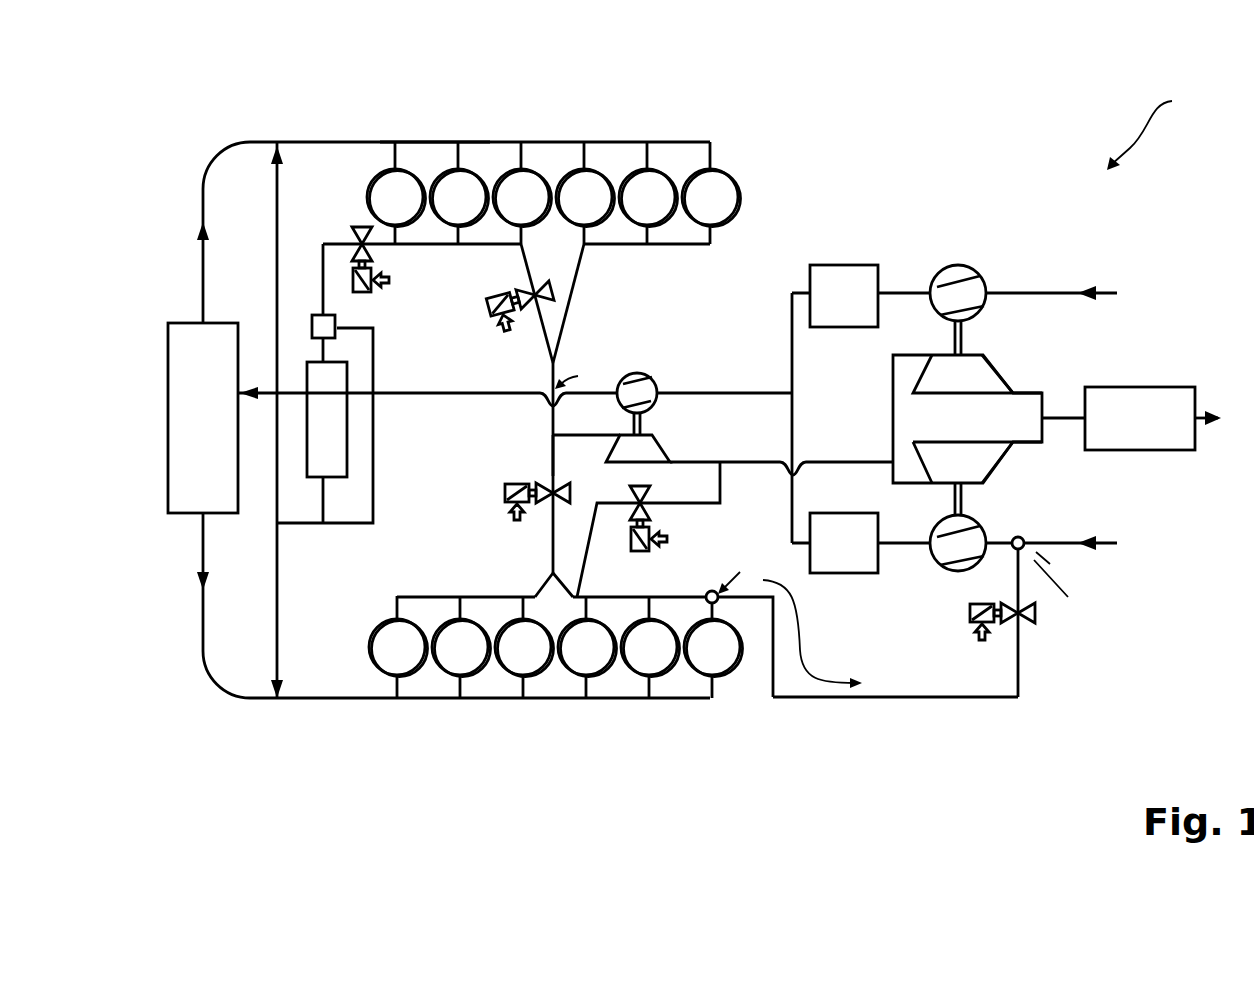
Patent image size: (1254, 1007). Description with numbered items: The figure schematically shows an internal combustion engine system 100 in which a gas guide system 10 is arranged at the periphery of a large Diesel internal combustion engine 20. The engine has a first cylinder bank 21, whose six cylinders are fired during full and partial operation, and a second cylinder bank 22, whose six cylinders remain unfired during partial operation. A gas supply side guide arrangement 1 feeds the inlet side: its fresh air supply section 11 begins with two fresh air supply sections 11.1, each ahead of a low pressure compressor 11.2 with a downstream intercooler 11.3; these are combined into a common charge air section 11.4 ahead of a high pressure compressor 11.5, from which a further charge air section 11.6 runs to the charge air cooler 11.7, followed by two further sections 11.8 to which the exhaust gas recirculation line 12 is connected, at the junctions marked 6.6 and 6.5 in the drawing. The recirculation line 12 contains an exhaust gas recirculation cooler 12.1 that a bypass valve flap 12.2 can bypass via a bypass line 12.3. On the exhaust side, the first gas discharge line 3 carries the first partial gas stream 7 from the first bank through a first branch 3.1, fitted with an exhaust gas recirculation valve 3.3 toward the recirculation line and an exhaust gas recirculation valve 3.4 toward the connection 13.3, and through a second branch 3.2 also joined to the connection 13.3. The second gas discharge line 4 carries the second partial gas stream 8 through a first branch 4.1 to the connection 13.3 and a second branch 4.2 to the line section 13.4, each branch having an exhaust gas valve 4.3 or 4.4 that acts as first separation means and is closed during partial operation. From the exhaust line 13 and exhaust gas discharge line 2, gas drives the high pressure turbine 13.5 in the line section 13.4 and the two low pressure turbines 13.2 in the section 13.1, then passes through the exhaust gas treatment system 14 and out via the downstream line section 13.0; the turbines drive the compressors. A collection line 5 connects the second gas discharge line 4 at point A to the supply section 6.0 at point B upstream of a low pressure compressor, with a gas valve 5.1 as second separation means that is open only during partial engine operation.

The internal combustion engine system 100 is at (1163, 129).
The internal combustion engine 20 is at (697, 125).
The first cylinder bank 21 is at (358, 179).
The second cylinder bank 22 is at (358, 661).
The gas supply side guide arrangement 1 is at (488, 133).
The exhaust gas discharge line 2 is at (854, 456).
The first gas discharge line 3 is at (666, 252).
The first branch of first gas discharge line 3.1 is at (522, 262).
The second branch of first gas discharge line 3.2 is at (575, 290).
The exhaust gas recirculation valve 3.3 is at (359, 240).
The exhaust gas recirculation valve 3.4 is at (541, 290).
The second gas discharge line 4 is at (644, 588).
The first branch of second gas discharge line 4.1 is at (548, 466).
The second branch of second gas discharge line 4.2 is at (722, 503).
The exhaust gas valve 4.3 is at (570, 496).
The exhaust gas valve 4.4 is at (645, 500).
The collection line 5 is at (876, 705).
The gas valve 5.1 is at (1036, 615).
The supply section 6.0 is at (1021, 533).
The junction 6.5 is at (281, 714).
The junction 6.6 is at (281, 136).
The first partial gas stream 7 is at (588, 430).
The second partial gas stream 8 is at (784, 625).
The gas guide system 10 is at (987, 236).
The fresh air supply section 11 is at (203, 290).
The fresh air supply section 11.1 is at (1037, 293).
The low pressure compressor 11.2 is at (950, 268).
The intercooler 11.3 is at (861, 419).
The common charge air section 11.4 is at (745, 393).
The high pressure compressor 11.5 is at (640, 376).
The further charge air section 11.6 is at (470, 393).
The charge air cooler 11.7 is at (203, 418).
The further sections of fresh air supply line 11.8 is at (232, 153).
The exhaust gas recirculation line 12 is at (322, 300).
The exhaust gas recirculation cooler 12.1 is at (327, 419).
The bypass valve flap 12.2 is at (337, 322).
The bypass line 12.3 is at (373, 492).
The exhaust line 13 is at (893, 398).
The downstream line section 13.0 is at (1205, 400).
The section 13.1 is at (1062, 418).
The low pressure turbine 13.2 is at (990, 365).
The connection 13.3 is at (543, 431).
The line section 13.4 is at (738, 460).
The high pressure turbine 13.5 is at (668, 450).
The exhaust gas treatment system 14 is at (1140, 418).